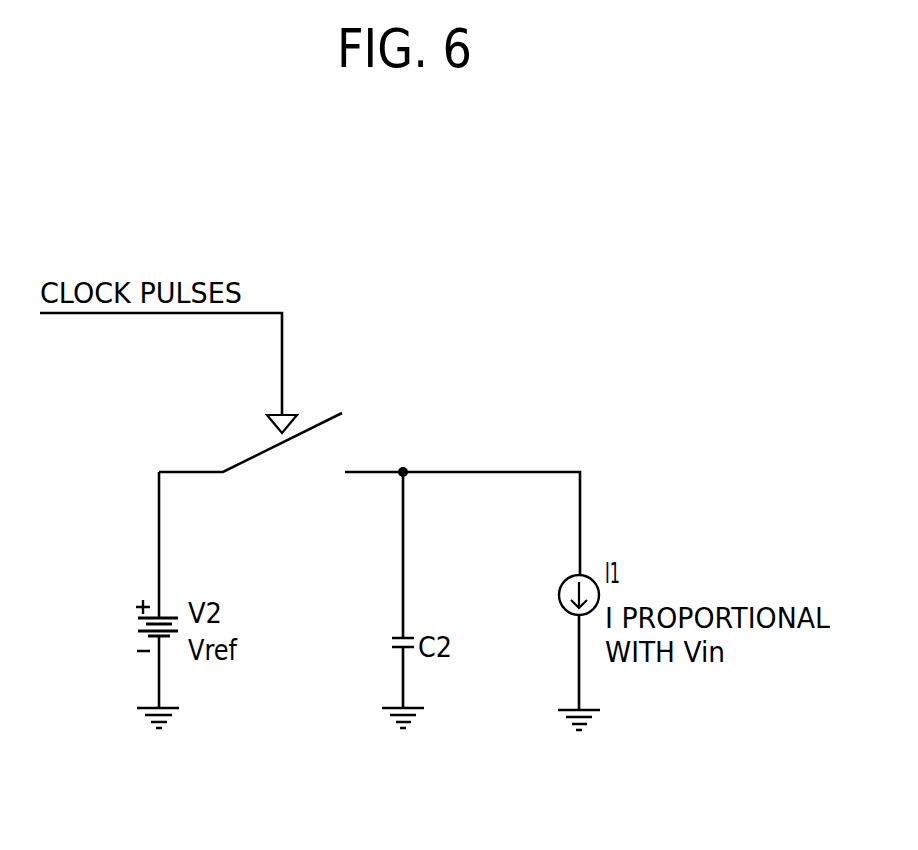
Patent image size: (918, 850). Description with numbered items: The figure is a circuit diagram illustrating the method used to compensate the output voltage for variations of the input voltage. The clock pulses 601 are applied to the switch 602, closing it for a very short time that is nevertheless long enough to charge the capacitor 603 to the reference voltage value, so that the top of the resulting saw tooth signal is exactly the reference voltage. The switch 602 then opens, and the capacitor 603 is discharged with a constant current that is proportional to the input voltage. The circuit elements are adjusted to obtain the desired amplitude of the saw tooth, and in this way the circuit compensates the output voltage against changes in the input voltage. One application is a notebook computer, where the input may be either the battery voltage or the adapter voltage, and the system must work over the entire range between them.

The clock pulses 601 is at (283, 360).
The switch 602 is at (248, 457).
The capacitor 603 is at (397, 632).